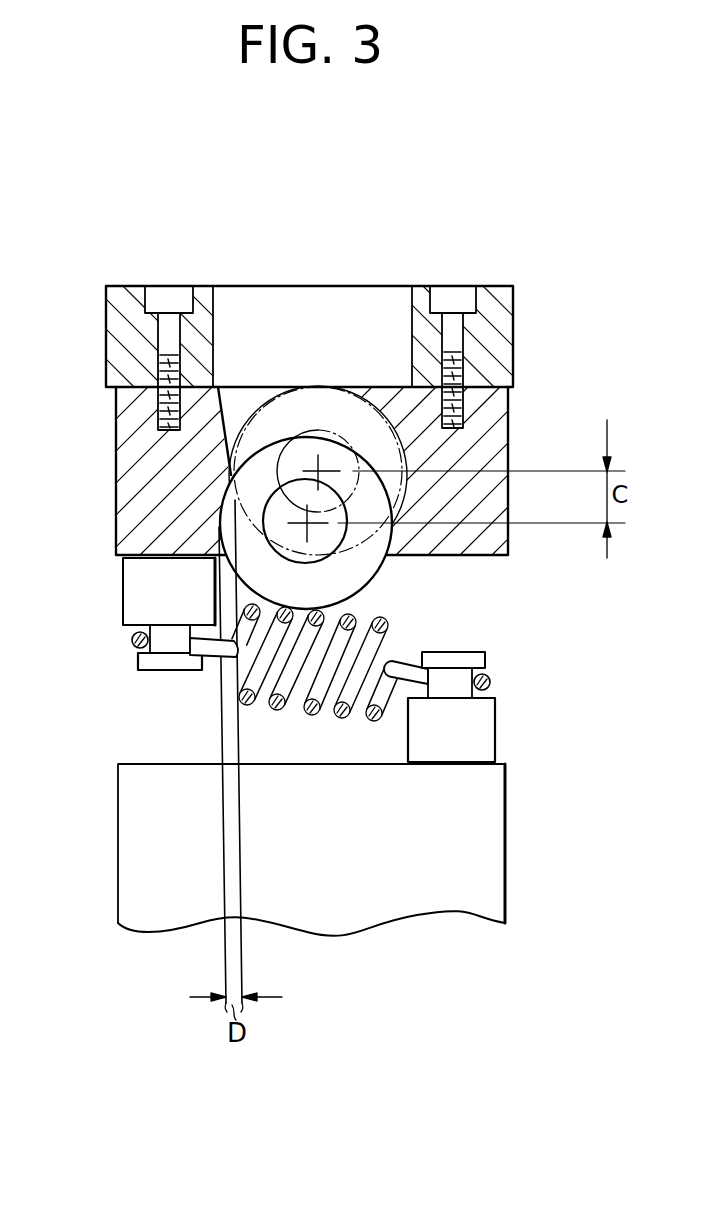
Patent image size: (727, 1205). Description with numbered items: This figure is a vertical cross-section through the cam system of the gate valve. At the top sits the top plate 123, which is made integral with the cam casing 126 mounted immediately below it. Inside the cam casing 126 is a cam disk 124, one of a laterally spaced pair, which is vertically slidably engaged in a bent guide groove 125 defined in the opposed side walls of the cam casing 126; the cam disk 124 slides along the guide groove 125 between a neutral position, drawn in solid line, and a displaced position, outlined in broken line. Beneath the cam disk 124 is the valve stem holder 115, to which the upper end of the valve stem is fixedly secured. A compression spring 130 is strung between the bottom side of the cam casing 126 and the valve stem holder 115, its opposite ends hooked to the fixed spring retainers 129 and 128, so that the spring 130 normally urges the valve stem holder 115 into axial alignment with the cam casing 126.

The valve stem holder 115 is at (477, 827).
The top plate 123 is at (490, 335).
The cam disk 124 is at (377, 583).
The bent guide groove 125 is at (225, 408).
The cam casing 126 is at (482, 423).
The fixed spring retainer 128 is at (477, 725).
The fixed spring retainer 129 is at (135, 600).
The compression spring 130 is at (385, 622).